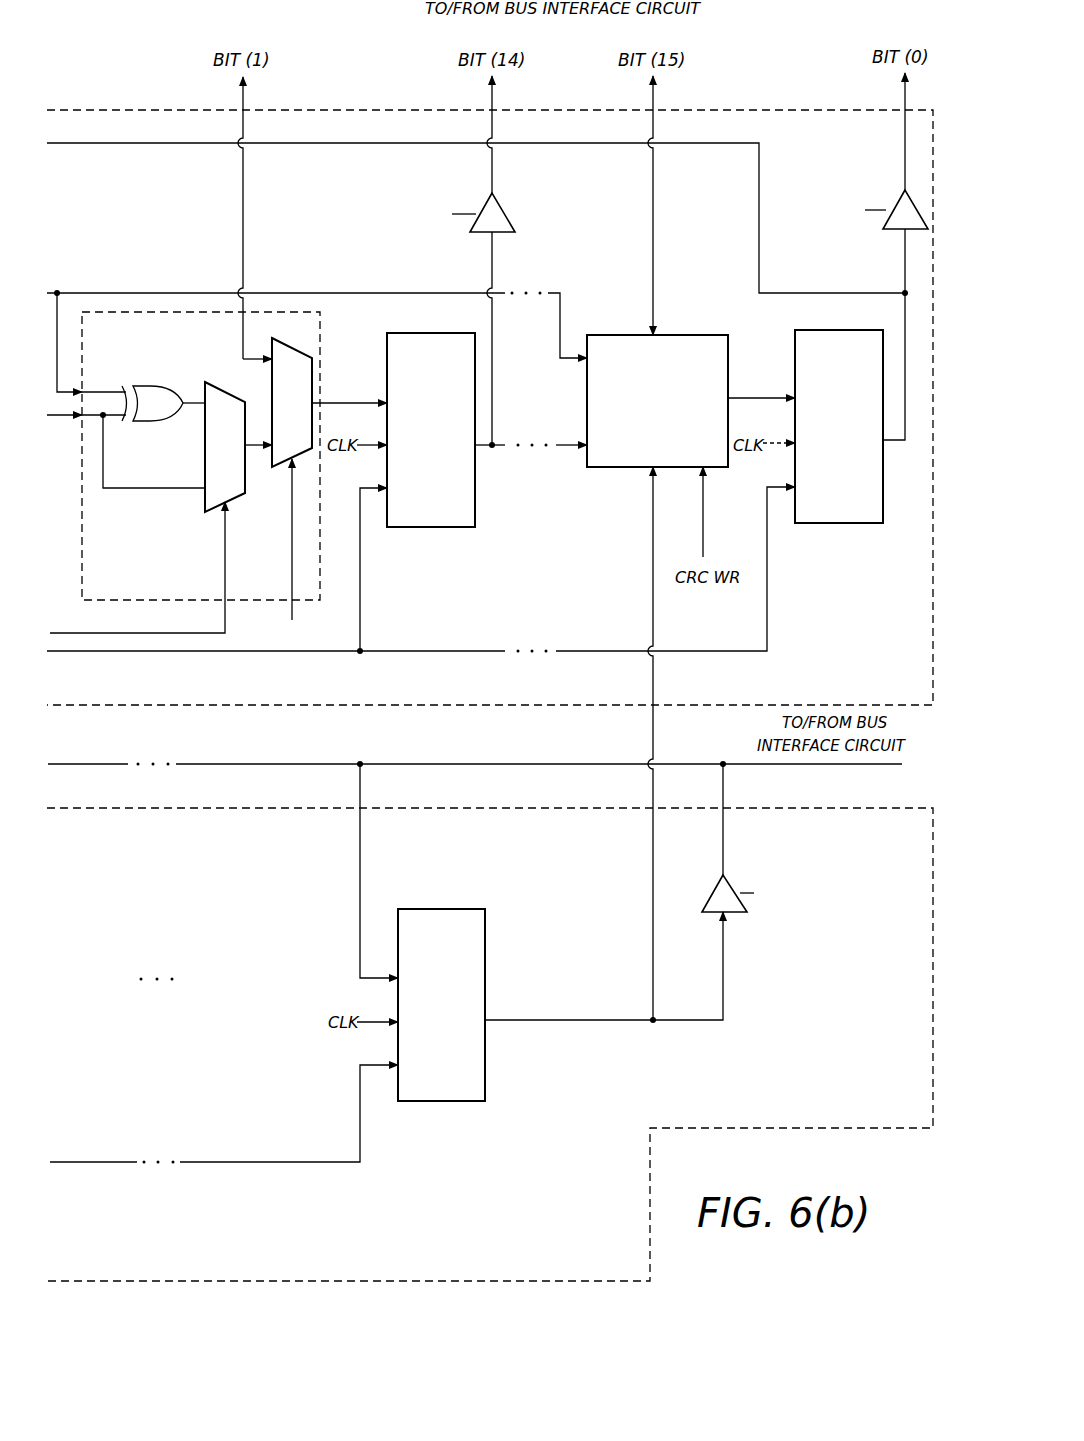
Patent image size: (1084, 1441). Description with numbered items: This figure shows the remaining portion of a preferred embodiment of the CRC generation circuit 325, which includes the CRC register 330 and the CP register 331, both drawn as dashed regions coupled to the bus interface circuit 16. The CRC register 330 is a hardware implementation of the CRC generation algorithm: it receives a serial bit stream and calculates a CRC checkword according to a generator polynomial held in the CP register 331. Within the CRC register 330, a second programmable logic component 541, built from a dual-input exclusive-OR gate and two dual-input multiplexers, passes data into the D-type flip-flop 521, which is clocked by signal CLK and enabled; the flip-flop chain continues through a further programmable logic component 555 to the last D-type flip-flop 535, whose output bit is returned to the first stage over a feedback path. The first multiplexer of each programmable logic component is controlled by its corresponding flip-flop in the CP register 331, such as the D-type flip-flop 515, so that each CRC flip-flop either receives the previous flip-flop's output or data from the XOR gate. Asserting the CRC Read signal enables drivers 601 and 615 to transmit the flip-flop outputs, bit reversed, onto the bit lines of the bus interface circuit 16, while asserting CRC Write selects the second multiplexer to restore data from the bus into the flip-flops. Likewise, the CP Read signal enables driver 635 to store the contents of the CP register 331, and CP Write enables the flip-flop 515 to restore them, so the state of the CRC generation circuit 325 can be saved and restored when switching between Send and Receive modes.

The bus interface circuit 16 is at (806, 757).
The CRC generation circuit 325 is at (490, 1053).
The CRC register 330 is at (385, 108).
The CP register 331 is at (357, 1281).
The D-type flip-flop 515 is at (449, 909).
The D-type flip-flop 521 is at (433, 527).
The D-type flip-flop 535 is at (835, 523).
The second programmable logic component 541 is at (322, 336).
The programmable logic component 555 is at (623, 335).
The driver 601 is at (510, 218).
The driver 615 is at (890, 232).
The driver 635 is at (733, 915).